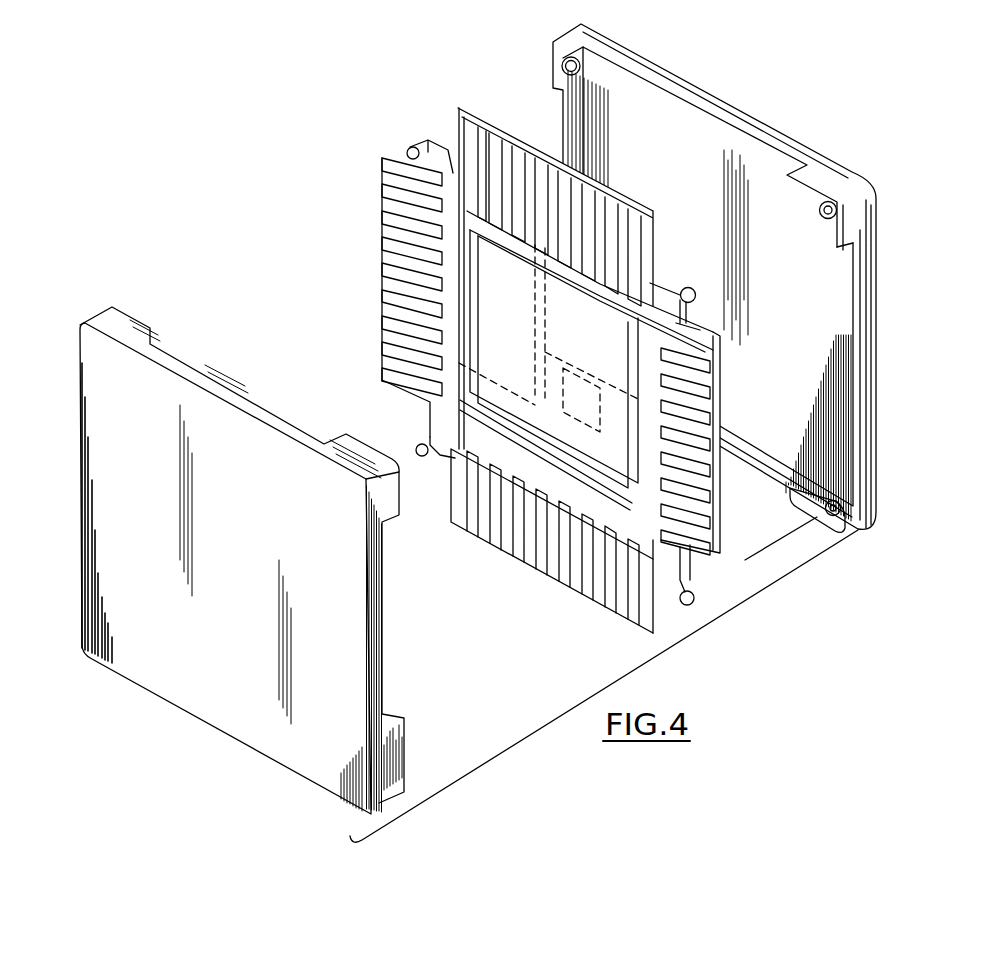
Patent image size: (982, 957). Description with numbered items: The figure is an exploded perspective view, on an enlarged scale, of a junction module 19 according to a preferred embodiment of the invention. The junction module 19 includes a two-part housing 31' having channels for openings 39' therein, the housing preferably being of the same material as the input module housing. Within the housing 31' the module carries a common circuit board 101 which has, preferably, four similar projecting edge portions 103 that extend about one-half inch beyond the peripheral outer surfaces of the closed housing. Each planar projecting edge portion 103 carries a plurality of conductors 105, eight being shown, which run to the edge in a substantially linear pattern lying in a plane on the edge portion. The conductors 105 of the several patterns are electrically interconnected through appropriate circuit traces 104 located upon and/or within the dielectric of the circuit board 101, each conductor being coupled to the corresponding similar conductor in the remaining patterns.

The junction module 19 is at (276, 124).
The two-part housing 31' is at (242, 516).
The openings 39' is at (554, 348).
The common circuit board 101 is at (356, 230).
The projecting edge portions 103 is at (364, 319).
The circuit traces 104 is at (585, 285).
The conductors 105 is at (384, 354).